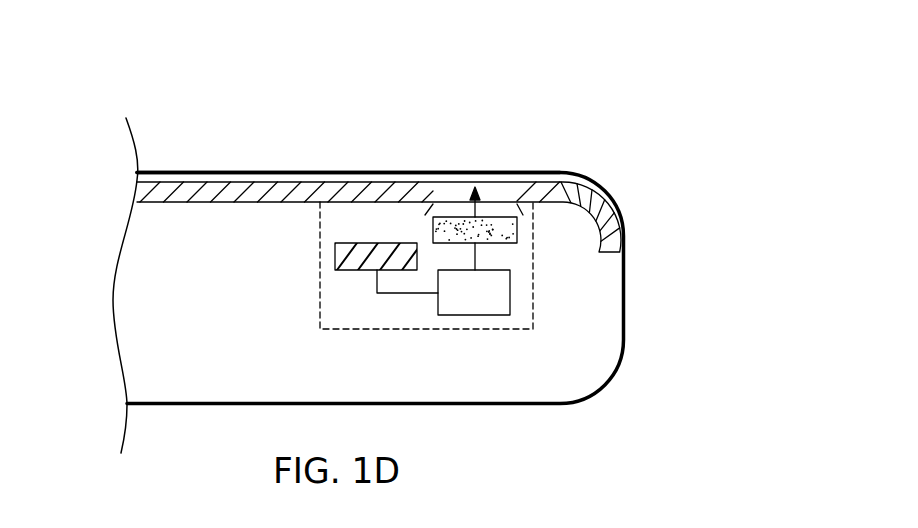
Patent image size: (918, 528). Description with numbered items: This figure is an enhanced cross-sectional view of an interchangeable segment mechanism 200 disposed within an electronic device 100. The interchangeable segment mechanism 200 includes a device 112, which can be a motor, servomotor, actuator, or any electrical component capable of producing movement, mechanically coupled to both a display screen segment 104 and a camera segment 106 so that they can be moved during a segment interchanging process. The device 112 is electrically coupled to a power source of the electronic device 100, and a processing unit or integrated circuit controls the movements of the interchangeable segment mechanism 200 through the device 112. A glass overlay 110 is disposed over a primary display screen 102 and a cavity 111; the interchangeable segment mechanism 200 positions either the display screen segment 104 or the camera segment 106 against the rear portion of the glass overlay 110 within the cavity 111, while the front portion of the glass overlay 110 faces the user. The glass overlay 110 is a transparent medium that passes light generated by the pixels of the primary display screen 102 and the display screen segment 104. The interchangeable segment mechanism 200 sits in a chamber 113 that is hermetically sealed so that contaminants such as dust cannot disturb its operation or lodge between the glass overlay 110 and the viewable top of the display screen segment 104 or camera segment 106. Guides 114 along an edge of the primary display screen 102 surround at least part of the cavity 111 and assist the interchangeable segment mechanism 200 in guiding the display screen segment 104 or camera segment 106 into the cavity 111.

The electronic device 100 is at (608, 63).
The primary display screen 102 is at (540, 184).
The display screen segment 104 is at (335, 257).
The camera segment 106 is at (517, 236).
The glass overlay 110 is at (295, 171).
The cavity 111 is at (517, 225).
The device 112 is at (493, 306).
The chamber 113 is at (335, 297).
The guides 114 is at (510, 197).
The interchangeable segment mechanism 200 is at (535, 273).